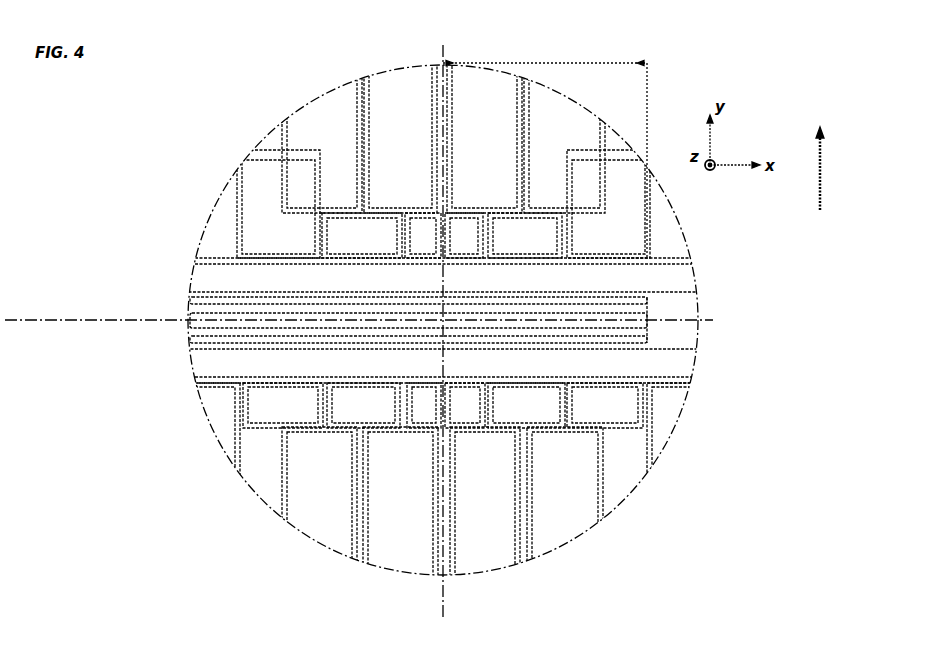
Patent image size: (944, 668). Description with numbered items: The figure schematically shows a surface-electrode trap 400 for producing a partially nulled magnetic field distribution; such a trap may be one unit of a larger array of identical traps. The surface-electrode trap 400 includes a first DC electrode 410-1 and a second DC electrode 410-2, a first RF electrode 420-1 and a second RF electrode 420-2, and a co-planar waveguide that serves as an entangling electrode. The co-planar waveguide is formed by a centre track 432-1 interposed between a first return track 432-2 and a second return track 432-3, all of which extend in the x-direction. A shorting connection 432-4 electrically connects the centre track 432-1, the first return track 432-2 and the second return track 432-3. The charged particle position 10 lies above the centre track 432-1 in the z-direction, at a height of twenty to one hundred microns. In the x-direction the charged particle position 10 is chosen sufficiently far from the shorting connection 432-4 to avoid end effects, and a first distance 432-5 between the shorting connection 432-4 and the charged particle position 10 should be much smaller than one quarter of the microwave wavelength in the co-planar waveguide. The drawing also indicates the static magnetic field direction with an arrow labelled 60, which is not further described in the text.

The charged particle position 10 is at (443, 320).
The main magnetic field B0 60 is at (852, 160).
The surface-electrode trap 400 is at (316, 72).
The first DC electrode 410-1 is at (443, 129).
The second DC electrode 410-2 is at (443, 525).
The first RF electrode 420-1 is at (697, 270).
The second RF electrode 420-2 is at (697, 363).
The centre track 432-1 is at (187, 320).
The first return track 432-2 is at (187, 300).
The second return track 432-3 is at (187, 342).
The shorting connection 432-4 is at (650, 323).
The first distance 432-5 is at (545, 145).